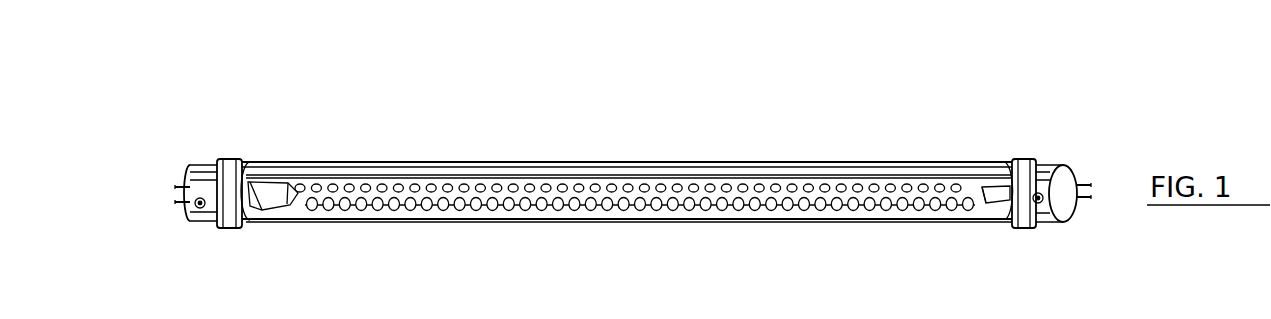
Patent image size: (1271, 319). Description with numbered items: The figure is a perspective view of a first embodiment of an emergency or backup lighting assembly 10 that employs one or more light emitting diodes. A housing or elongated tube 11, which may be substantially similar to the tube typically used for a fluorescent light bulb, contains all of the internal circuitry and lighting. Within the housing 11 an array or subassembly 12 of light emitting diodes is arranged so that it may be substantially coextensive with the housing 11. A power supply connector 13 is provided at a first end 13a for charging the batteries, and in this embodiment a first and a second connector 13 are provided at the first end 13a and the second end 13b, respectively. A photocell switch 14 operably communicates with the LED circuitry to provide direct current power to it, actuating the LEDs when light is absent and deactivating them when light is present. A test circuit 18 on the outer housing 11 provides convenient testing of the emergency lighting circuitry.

The emergency or backup lighting assembly 10 is at (745, 135).
The housing or elongated tube 11 is at (702, 221).
The array or subassembly of light emitting diodes 12 is at (835, 211).
The power supply connector 13 is at (1083, 205).
The first end 13a is at (1078, 168).
The second end 13b is at (197, 158).
The photocell switch 14 is at (1038, 193).
The test circuit 18 is at (190, 213).